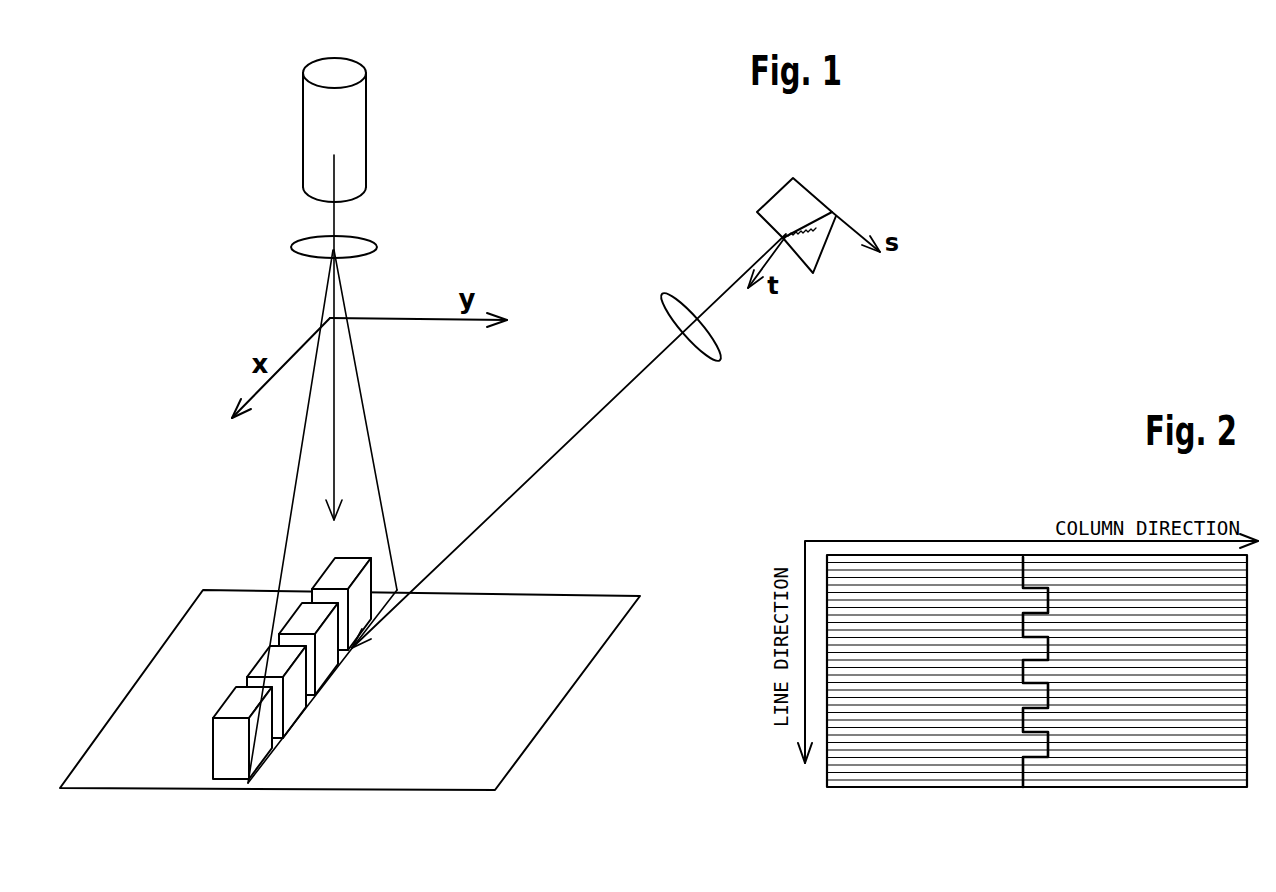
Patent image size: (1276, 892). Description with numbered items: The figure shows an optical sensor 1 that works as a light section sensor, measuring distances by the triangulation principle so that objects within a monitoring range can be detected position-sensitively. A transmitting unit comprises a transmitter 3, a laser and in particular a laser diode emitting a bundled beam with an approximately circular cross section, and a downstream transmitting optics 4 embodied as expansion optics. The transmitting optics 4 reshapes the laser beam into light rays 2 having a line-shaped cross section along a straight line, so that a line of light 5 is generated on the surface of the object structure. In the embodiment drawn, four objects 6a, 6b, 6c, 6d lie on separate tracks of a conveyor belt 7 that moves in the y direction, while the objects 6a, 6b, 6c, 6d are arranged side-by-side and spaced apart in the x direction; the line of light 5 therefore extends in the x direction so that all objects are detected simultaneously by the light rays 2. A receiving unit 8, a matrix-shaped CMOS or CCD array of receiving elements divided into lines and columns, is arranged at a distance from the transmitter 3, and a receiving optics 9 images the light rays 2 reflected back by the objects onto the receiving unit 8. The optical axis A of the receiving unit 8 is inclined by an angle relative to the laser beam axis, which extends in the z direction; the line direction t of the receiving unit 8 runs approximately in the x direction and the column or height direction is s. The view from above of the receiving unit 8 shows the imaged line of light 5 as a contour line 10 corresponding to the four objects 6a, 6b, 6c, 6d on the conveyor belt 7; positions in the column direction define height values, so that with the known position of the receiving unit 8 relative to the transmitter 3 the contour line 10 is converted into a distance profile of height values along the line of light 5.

In FIG. 1, the optical sensor 1 is at (585, 117).
In FIG. 1, the light rays 2 is at (371, 433).
In FIG. 1, the transmitter 3 is at (352, 133).
In FIG. 1, the transmitting optics 4 is at (360, 245).
In FIG. 1, the line of light 5 is at (394, 592).
In FIG. 1, the object 6a is at (258, 754).
In FIG. 1, the object 6b is at (293, 711).
In FIG. 1, the object 6c is at (326, 668).
In FIG. 1, the object 6d is at (358, 626).
In FIG. 1, the conveyor belt 7 is at (563, 606).
In FIG. 1, the receiving unit 8 is at (826, 221).
In FIG. 2, the receiving unit 8 is at (900, 510).
In FIG. 1, the receiving optics 9 is at (712, 347).
In FIG. 2, the contour line 10 is at (1026, 563).
In FIG. 1, the optical axis A is at (592, 421).